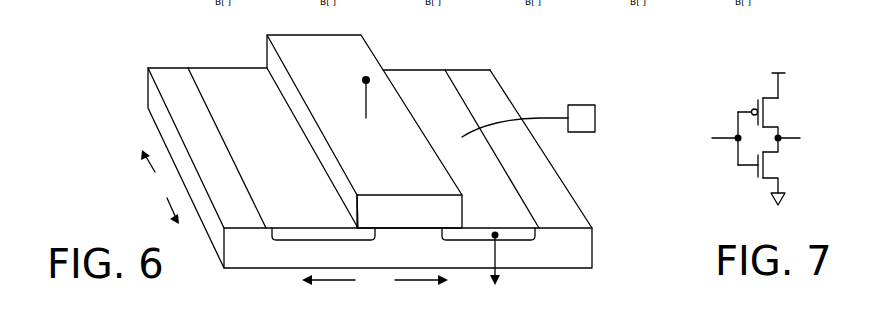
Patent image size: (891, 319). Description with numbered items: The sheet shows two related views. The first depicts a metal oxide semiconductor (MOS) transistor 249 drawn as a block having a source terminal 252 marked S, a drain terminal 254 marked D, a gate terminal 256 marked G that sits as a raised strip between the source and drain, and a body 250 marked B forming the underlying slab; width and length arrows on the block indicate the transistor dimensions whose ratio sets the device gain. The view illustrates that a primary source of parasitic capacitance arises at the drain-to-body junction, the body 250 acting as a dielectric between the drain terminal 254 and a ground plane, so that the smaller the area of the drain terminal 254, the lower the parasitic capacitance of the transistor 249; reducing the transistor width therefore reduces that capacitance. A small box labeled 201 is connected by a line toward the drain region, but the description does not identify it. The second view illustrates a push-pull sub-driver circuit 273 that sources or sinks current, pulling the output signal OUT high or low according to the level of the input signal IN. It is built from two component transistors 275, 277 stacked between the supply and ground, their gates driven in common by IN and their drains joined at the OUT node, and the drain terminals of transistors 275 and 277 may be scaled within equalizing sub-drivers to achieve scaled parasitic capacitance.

In FIG. 6, the MOS transistor 249 is at (146, 36).
In FIG. 6, the body 250 is at (592, 254).
In FIG. 6, the source terminal 252 is at (281, 154).
In FIG. 6, the drain terminal 254 is at (490, 155).
In FIG. 6, the gate terminal 256 is at (367, 78).
In FIG. 6, the terminal 201 is at (578, 105).
In FIG. 7, the push-pull sub-driver circuit 273 is at (725, 78).
In FIG. 7, the component transistor 275 is at (773, 111).
In FIG. 7, the component transistor 277 is at (773, 171).